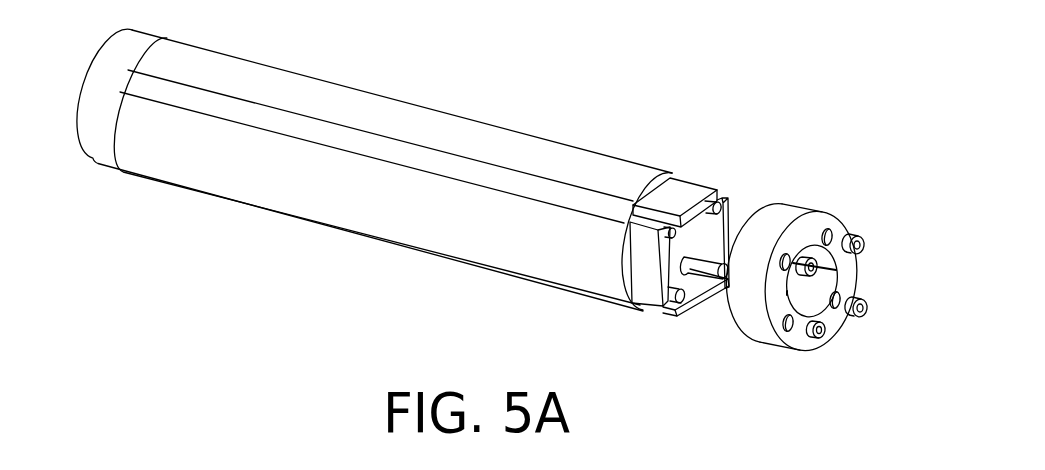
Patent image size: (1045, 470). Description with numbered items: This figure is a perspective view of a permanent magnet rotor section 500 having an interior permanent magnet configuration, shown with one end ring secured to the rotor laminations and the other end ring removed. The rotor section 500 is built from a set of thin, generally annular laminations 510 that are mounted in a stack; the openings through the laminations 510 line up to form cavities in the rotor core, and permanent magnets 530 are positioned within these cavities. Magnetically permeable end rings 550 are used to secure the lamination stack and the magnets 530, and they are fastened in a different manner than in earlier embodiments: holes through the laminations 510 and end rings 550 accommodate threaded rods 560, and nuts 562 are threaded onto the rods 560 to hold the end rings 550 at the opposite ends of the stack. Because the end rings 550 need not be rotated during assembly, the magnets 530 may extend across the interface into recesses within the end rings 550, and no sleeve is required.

The rotor section 500 is at (634, 141).
The lamination 510 is at (483, 123).
The permanent magnet 530 is at (697, 188).
The end ring 550 is at (783, 208).
The threaded rod 560 is at (730, 205).
The nut 562 is at (858, 238).